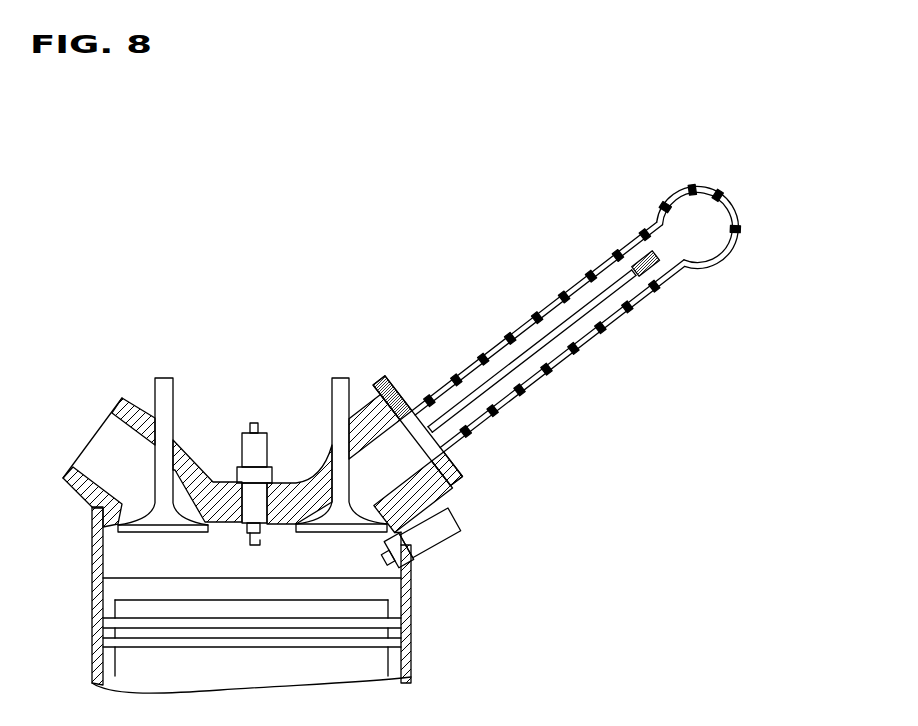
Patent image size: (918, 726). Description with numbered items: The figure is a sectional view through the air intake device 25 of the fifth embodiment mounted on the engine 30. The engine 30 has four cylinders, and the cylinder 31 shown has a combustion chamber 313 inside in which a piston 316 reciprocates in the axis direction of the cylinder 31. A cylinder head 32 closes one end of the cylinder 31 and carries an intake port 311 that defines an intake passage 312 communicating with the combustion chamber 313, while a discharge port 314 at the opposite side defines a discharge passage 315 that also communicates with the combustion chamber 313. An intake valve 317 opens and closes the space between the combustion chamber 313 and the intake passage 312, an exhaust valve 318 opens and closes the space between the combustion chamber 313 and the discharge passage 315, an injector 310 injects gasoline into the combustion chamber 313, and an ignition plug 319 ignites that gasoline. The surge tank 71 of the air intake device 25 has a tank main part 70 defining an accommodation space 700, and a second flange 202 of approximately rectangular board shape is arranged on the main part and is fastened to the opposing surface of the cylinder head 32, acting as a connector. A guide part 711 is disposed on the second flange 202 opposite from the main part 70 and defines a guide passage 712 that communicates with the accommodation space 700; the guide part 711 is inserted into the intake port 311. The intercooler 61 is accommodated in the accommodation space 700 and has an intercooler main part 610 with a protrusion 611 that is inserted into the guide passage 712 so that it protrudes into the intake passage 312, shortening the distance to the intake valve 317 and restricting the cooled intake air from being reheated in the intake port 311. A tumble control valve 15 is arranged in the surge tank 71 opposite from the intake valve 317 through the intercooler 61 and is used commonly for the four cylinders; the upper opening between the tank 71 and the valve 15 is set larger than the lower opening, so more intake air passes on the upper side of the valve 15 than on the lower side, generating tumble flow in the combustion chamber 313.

The engine 30 is at (424, 673).
The cylinder 31 is at (100, 615).
The cylinder head 32 is at (94, 512).
The combustion chamber 313 is at (200, 568).
The piston 316 is at (135, 660).
The discharge port 314 is at (134, 412).
The discharge passage 315 is at (105, 457).
The exhaust valve 318 is at (163, 378).
The intake valve 317 is at (340, 378).
The ignition plug 319 is at (254, 423).
The protrusion 611 is at (332, 440).
The intake port 311 is at (372, 436).
The guide part 711 is at (386, 378).
The guide passage 712 is at (420, 400).
The second flange 202 is at (450, 471).
The injector 310 is at (457, 515).
The intake passage 312 is at (440, 543).
The tank main part 70 is at (606, 340).
The accommodation space 700 is at (658, 300).
The intercooler main part 610 is at (529, 361).
The intercooler 61 is at (623, 282).
The surge tank 71 is at (751, 233).
The tumble control valve 15 is at (683, 274).
The air intake device 25 is at (495, 313).